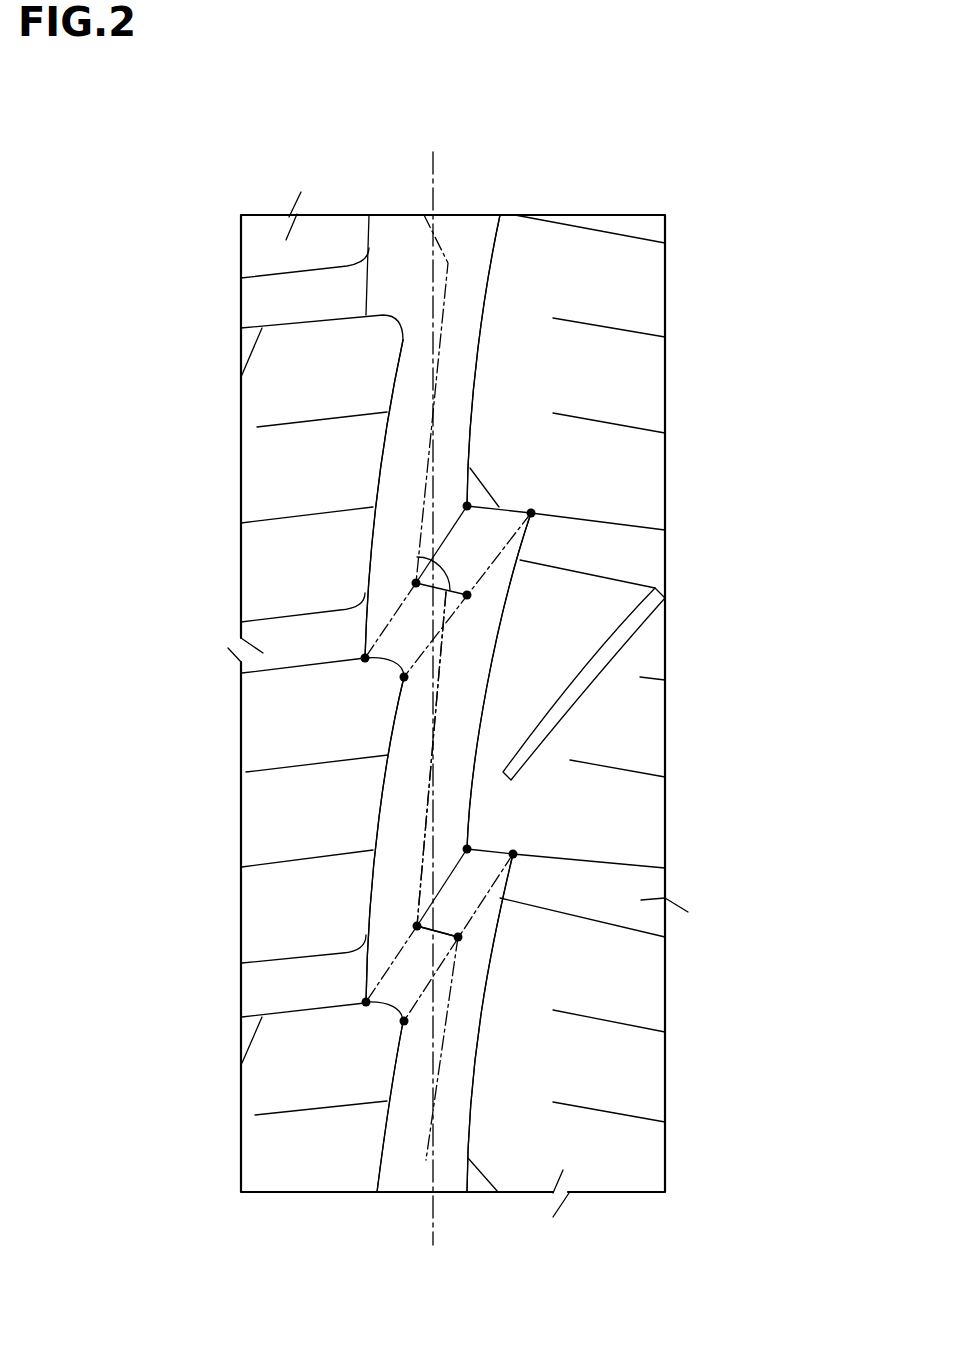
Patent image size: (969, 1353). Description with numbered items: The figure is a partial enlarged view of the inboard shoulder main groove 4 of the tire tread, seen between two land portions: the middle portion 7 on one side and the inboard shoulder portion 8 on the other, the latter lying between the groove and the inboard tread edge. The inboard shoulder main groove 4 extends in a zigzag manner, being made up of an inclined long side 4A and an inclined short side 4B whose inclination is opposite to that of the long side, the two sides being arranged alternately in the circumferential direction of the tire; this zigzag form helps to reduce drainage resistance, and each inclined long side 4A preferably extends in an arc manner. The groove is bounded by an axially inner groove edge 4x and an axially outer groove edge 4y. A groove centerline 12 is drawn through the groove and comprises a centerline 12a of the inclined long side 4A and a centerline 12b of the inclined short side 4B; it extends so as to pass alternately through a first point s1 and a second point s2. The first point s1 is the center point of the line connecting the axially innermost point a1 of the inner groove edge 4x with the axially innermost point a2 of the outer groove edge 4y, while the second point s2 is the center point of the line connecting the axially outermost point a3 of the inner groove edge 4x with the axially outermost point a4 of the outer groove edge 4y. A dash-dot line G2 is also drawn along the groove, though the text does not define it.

The middle portion 7 is at (317, 382).
The inboard shoulder portion 8 is at (567, 288).
The inboard shoulder main groove 4 is at (573, 719).
The inclined long side 4A is at (450, 402).
The inclined short side 4B is at (478, 540).
The axially inner groove edge 4x is at (390, 1107).
The axially outer groove edge 4y is at (470, 1080).
The groove center line G2 is at (433, 192).
The groove centerline 12 is at (260, 741).
The centerline of the inclined long side 12a is at (427, 800).
The centerline of the inclined short side 12b is at (417, 557).
The axially innermost point of the axially inner groove edge a1 is at (366, 1003).
The axially innermost point of the axially outer groove edge a2 is at (467, 849).
The axially outermost point of the axially inner groove edge a3 is at (404, 1022).
The axially outermost point of the axially outer groove edge a4 is at (513, 854).
The first point s1 is at (417, 926).
The second point s2 is at (458, 937).